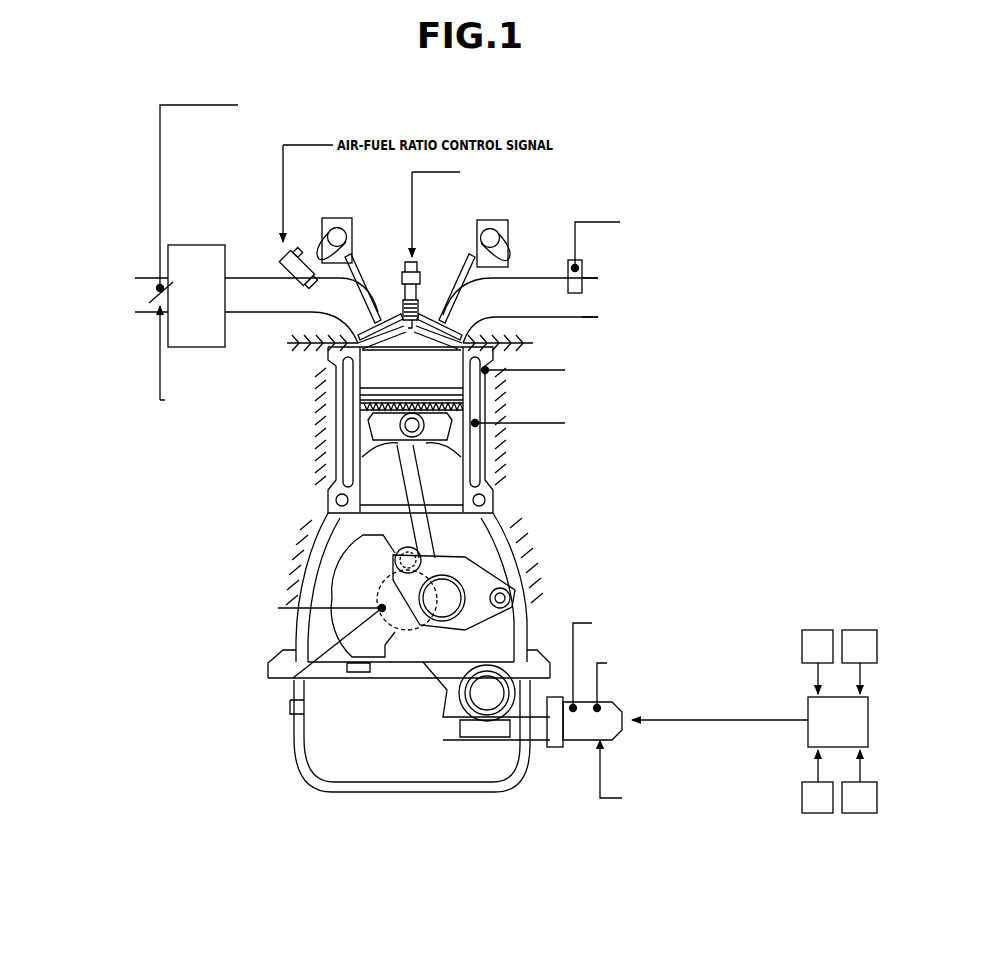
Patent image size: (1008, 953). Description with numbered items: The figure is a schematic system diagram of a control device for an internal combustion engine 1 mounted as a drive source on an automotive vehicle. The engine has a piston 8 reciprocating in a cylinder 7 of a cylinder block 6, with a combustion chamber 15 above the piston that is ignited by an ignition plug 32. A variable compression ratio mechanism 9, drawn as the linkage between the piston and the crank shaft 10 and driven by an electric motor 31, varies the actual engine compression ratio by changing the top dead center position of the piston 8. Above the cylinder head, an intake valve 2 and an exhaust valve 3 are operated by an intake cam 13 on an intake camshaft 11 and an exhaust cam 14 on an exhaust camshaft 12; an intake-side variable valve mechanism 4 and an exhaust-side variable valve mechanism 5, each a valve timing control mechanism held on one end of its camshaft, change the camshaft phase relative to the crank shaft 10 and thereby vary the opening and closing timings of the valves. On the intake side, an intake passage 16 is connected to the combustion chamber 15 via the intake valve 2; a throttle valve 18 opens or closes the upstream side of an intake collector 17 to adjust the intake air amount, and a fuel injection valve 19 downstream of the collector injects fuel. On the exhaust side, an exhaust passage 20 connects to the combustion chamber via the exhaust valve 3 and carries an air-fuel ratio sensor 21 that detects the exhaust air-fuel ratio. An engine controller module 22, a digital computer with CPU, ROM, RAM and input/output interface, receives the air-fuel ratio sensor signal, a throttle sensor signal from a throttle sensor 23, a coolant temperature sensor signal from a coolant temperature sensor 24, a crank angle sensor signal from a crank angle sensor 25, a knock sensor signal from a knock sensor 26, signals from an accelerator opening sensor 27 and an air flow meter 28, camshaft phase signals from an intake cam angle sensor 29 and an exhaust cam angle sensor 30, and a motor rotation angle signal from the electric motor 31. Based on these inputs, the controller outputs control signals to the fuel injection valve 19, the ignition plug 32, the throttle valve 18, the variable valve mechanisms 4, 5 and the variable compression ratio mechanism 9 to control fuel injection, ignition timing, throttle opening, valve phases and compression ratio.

The internal combustion engine 1 is at (275, 530).
The intake valve 2 is at (363, 262).
The exhaust valve 3 is at (458, 287).
The intake-side variable valve mechanism 4 is at (357, 214).
The exhaust-side variable valve mechanism 5 is at (497, 216).
The cylinder block 6 is at (327, 482).
The cylinder 7 is at (367, 363).
The piston 8 is at (367, 430).
The variable compression ratio mechanism 9 is at (470, 552).
The crank shaft 10 is at (350, 583).
The intake camshaft 11 is at (340, 223).
The exhaust camshaft 12 is at (478, 230).
The intake cam 13 is at (320, 240).
The exhaust cam 14 is at (518, 248).
The combustion chamber 15 is at (452, 375).
The intake passage 16 is at (243, 287).
The intake collector 17 is at (197, 270).
The throttle valve 18 is at (158, 298).
The fuel injection valve 19 is at (277, 243).
The exhaust passage 20 is at (580, 298).
The air-fuel ratio sensor 21 is at (578, 273).
The engine controller module 22 is at (812, 735).
The throttle sensor 23 is at (157, 280).
The coolant temperature sensor 24 is at (480, 430).
The crank angle sensor 25 is at (335, 628).
The knock sensor 26 is at (527, 358).
The accelerator opening sensor 27 is at (817, 662).
The air flow meter 28 is at (859, 662).
The intake cam angle sensor 29 is at (817, 781).
The exhaust cam angle sensor 30 is at (859, 781).
The electric motor 31 is at (580, 742).
The ignition plug 32 is at (400, 290).